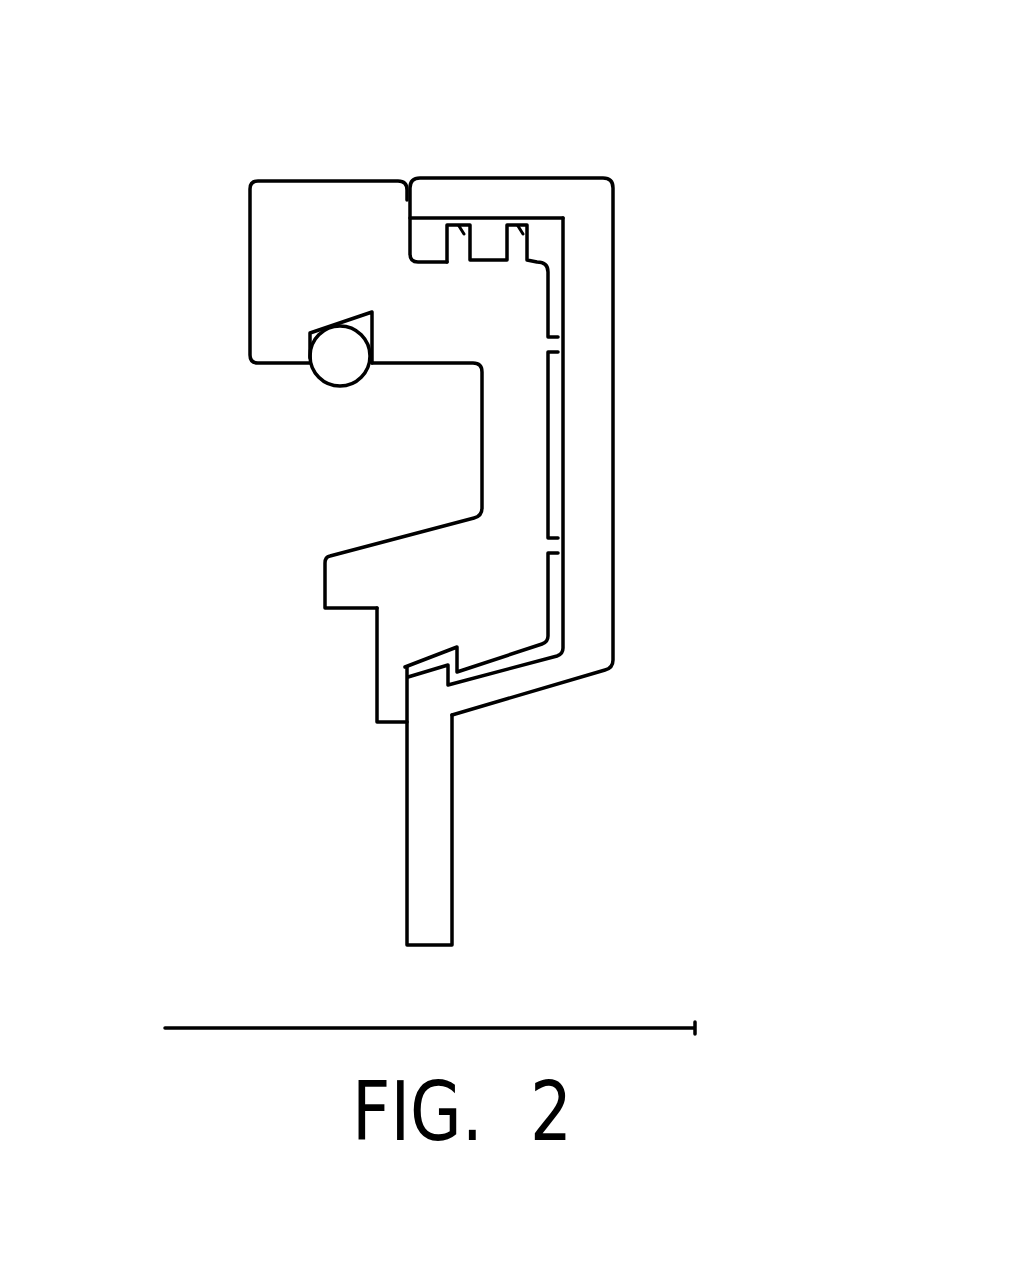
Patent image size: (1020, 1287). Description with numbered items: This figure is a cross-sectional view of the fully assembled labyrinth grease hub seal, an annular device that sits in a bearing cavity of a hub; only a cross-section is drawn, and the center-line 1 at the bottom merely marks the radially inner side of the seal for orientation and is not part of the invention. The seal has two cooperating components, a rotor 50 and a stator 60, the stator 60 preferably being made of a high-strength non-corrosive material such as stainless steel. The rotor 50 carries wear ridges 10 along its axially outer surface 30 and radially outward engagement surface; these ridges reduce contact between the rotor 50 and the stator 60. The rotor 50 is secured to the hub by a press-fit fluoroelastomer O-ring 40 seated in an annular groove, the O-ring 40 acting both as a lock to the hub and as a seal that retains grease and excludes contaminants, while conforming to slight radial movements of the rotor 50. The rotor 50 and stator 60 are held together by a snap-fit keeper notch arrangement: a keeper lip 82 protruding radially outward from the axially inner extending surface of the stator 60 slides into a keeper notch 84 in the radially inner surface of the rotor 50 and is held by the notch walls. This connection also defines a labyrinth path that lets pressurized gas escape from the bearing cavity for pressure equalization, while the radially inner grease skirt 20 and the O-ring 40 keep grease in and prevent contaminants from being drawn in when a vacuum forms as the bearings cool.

The center-line 1 is at (643, 1030).
The wear ridge 10 is at (525, 223).
The grease skirt 20 is at (392, 708).
The axially outer surface 30 is at (548, 420).
The O-ring 40 is at (330, 356).
The rotor 50 is at (398, 298).
The stator 60 is at (593, 257).
The keeper lip 82 is at (430, 695).
The keeper notch 84 is at (445, 650).